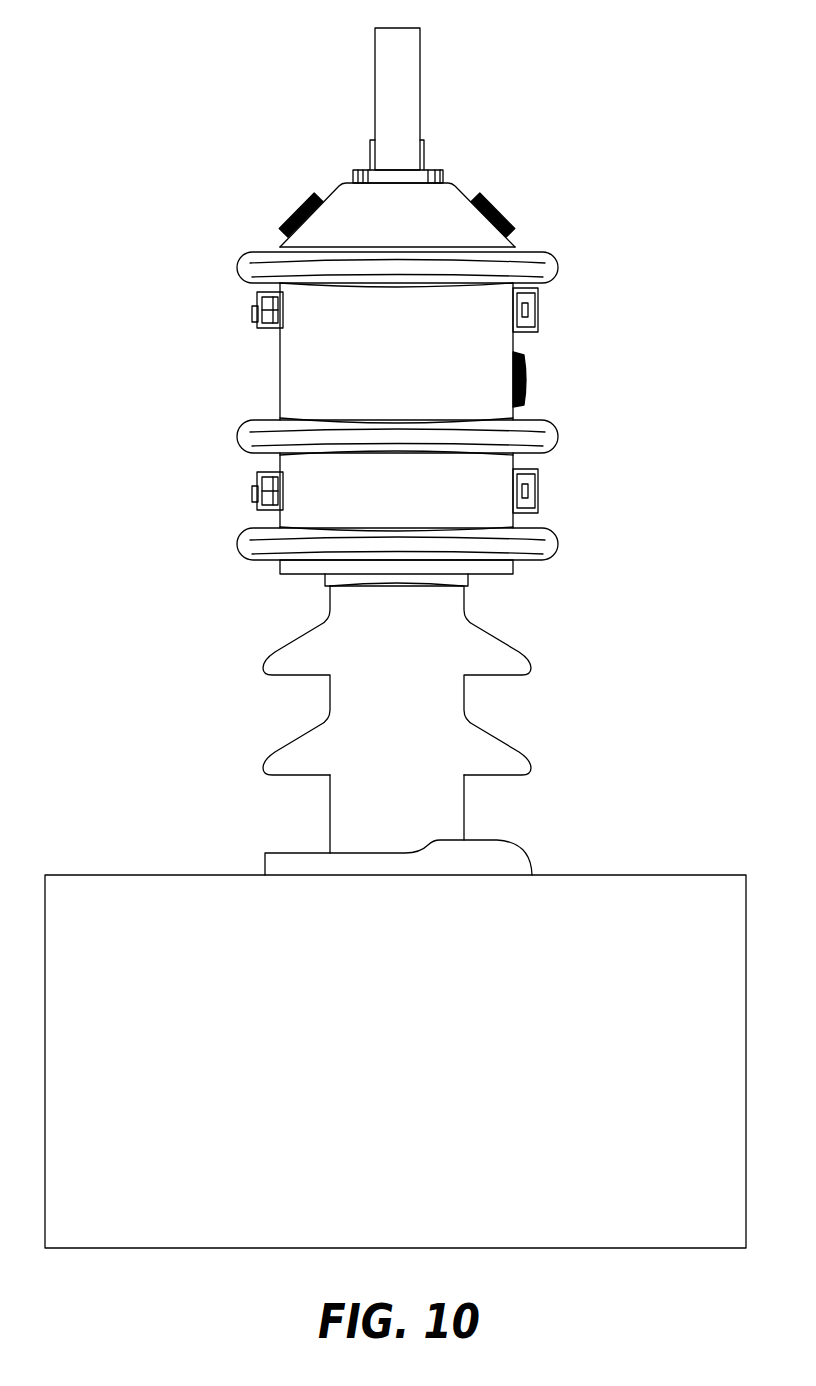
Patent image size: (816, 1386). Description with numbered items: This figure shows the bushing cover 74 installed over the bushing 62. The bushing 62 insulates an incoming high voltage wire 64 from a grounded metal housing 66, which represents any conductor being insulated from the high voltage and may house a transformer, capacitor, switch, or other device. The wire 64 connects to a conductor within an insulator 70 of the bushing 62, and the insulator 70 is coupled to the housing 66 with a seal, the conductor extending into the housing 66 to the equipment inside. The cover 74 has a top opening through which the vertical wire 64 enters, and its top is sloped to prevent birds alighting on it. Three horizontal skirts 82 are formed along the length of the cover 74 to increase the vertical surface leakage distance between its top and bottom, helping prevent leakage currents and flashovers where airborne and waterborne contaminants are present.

The bushing 62 is at (447, 730).
The high voltage wire 64 is at (420, 34).
The housing 66 is at (635, 875).
The insulator 70 is at (296, 638).
The bushing cover 74 is at (443, 378).
The skirts 82 is at (556, 266).